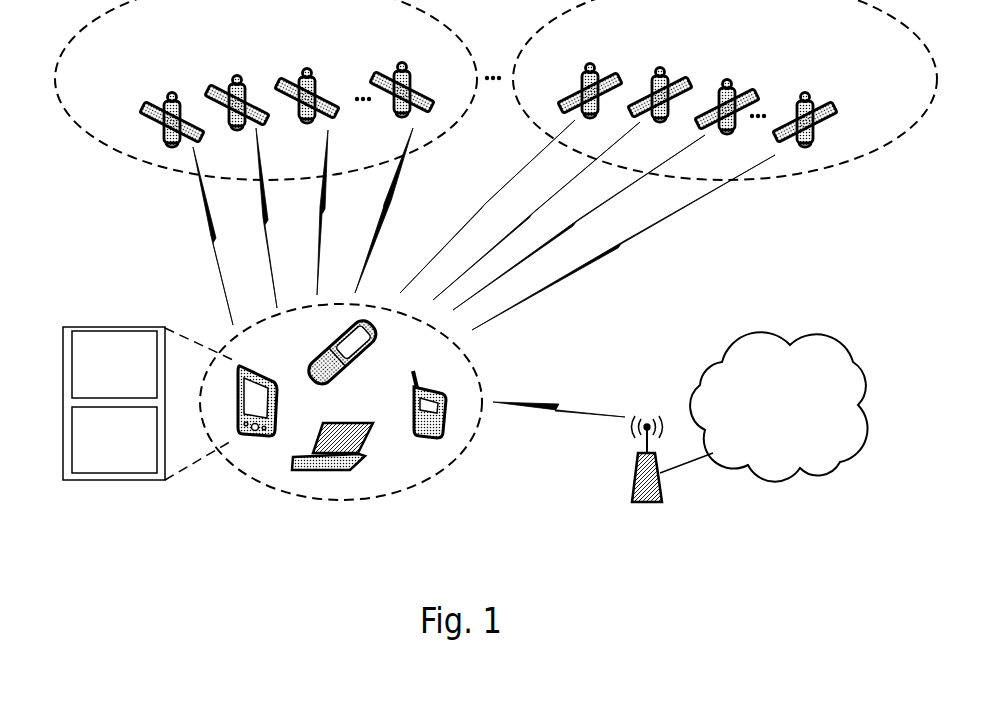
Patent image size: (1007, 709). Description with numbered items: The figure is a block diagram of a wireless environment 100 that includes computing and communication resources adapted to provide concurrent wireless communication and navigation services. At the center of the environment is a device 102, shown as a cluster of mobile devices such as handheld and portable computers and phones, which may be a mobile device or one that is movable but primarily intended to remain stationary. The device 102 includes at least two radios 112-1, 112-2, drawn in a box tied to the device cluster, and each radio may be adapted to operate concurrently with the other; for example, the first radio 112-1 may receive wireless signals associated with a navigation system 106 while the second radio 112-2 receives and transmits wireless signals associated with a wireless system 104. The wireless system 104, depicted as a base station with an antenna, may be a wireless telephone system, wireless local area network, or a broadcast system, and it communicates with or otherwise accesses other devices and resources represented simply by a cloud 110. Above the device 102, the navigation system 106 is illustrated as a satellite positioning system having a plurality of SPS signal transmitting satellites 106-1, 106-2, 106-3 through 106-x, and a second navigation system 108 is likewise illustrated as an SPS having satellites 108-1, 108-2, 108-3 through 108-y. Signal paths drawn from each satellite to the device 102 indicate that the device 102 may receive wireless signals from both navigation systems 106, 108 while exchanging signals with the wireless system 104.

The wireless environment 100 is at (193, 540).
The device 102 is at (342, 498).
The wireless system 104 is at (637, 510).
The navigation system 106 is at (172, 172).
The SPS signal transmitting satellite 106-1 is at (172, 98).
The SPS signal transmitting satellite 106-2 is at (235, 80).
The SPS signal transmitting satellite 106-3 is at (307, 72).
The SPS signal transmitting satellite 106-x is at (402, 67).
The other navigation system 108 is at (820, 172).
The SPS signal transmitting satellite 108-1 is at (592, 68).
The SPS signal transmitting satellite 108-2 is at (685, 72).
The SPS signal transmitting satellite 108-3 is at (758, 80).
The SPS signal transmitting satellite 108-y is at (823, 98).
The cloud 110 is at (770, 480).
The radio 112-1 is at (93, 388).
The radio 112-2 is at (93, 463).